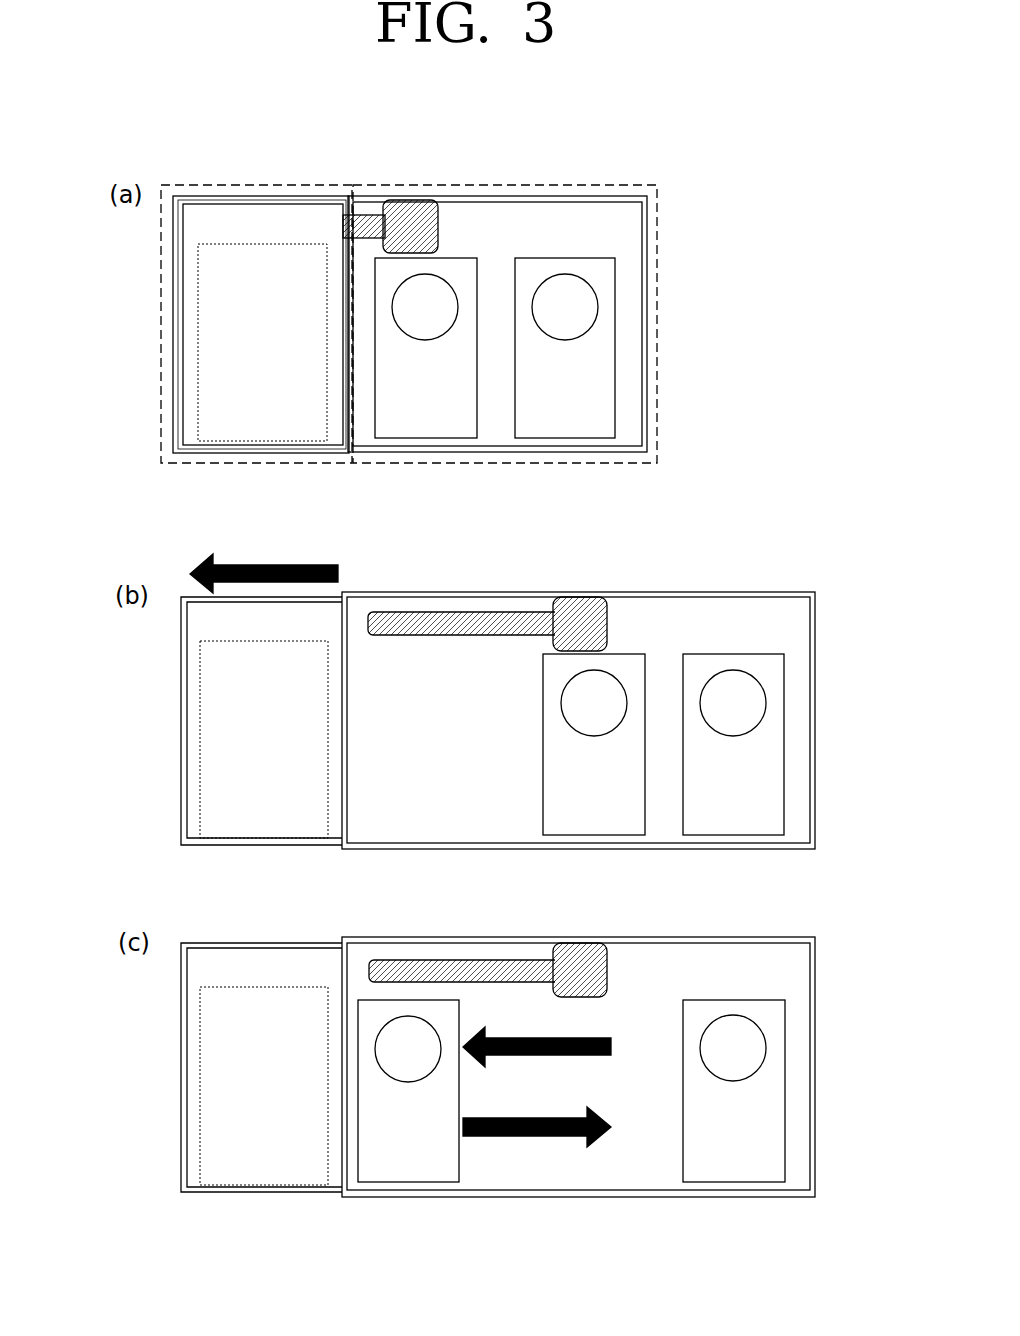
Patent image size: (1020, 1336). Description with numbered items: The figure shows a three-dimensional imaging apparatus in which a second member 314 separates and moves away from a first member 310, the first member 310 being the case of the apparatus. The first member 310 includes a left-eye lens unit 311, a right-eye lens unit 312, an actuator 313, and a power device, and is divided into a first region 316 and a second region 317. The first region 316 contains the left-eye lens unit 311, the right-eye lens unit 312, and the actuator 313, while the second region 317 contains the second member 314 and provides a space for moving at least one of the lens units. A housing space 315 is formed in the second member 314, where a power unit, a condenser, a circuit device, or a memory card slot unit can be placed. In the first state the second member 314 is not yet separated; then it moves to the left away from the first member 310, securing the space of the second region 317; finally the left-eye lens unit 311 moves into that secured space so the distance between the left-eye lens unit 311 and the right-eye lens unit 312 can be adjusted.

The first member 310 is at (616, 196).
The left-eye lens unit 311 is at (425, 407).
The right-eye lens unit 312 is at (563, 407).
The actuator 313 is at (406, 207).
The second member 314 is at (192, 372).
The housing space 315 is at (226, 291).
The first region 316 is at (516, 184).
The second region 317 is at (253, 184).